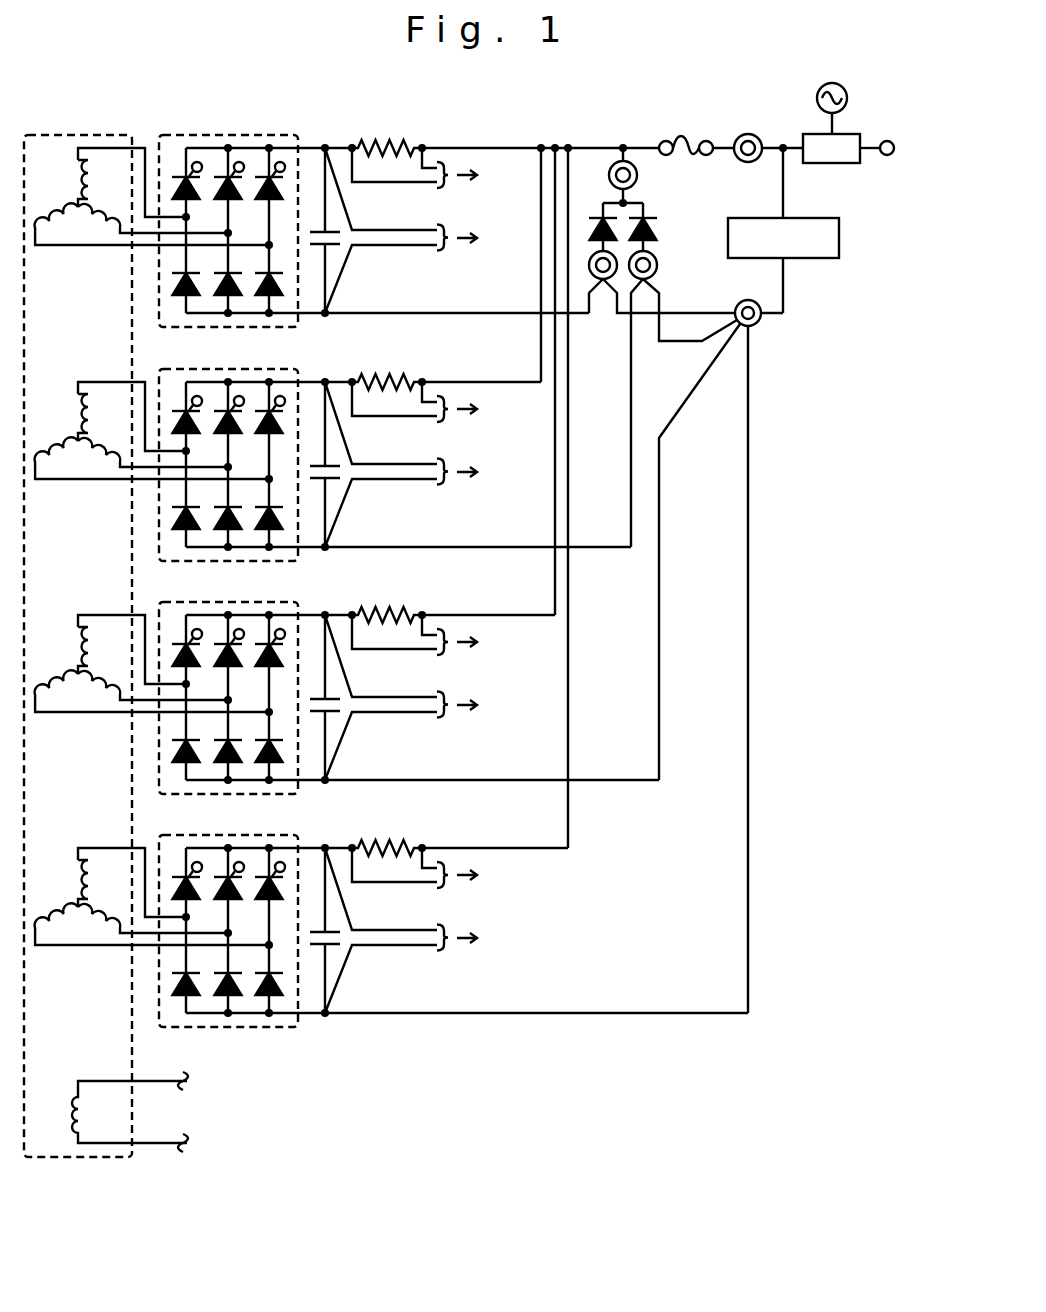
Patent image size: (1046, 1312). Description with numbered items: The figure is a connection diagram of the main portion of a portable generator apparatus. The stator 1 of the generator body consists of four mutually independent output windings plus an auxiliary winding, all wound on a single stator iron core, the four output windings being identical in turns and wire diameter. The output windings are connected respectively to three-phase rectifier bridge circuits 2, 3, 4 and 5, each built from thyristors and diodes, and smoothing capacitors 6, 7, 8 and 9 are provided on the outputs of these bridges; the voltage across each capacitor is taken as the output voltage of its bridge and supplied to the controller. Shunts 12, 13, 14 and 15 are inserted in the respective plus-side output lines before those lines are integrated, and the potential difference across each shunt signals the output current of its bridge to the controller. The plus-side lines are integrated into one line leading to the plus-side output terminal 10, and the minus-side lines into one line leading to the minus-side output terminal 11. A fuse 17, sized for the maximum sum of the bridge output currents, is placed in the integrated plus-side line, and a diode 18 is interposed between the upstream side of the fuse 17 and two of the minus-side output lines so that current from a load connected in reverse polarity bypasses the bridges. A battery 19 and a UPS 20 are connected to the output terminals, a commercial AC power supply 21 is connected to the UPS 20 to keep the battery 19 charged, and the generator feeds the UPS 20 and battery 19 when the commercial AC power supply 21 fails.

The stator 1 is at (70, 135).
The three-phase rectifier bridge circuit 2 is at (267, 135).
The three-phase rectifier bridge circuit 3 is at (267, 369).
The three-phase rectifier bridge circuit 4 is at (267, 602).
The three-phase rectifier bridge circuit 5 is at (267, 835).
The smoothing capacitor 6 is at (335, 220).
The smoothing capacitor 7 is at (335, 454).
The smoothing capacitor 8 is at (335, 687).
The smoothing capacitor 9 is at (335, 920).
The plus-side output terminal 10 is at (748, 130).
The minus-side output terminal 11 is at (738, 300).
The shunt 12 is at (386, 137).
The shunt 13 is at (386, 371).
The shunt 14 is at (386, 604).
The shunt 15 is at (386, 837).
The fuse 17 is at (688, 135).
The diode 18 is at (674, 221).
The battery 19 is at (812, 259).
The UPS 20 is at (838, 166).
The commercial AC power supply 21 is at (837, 82).